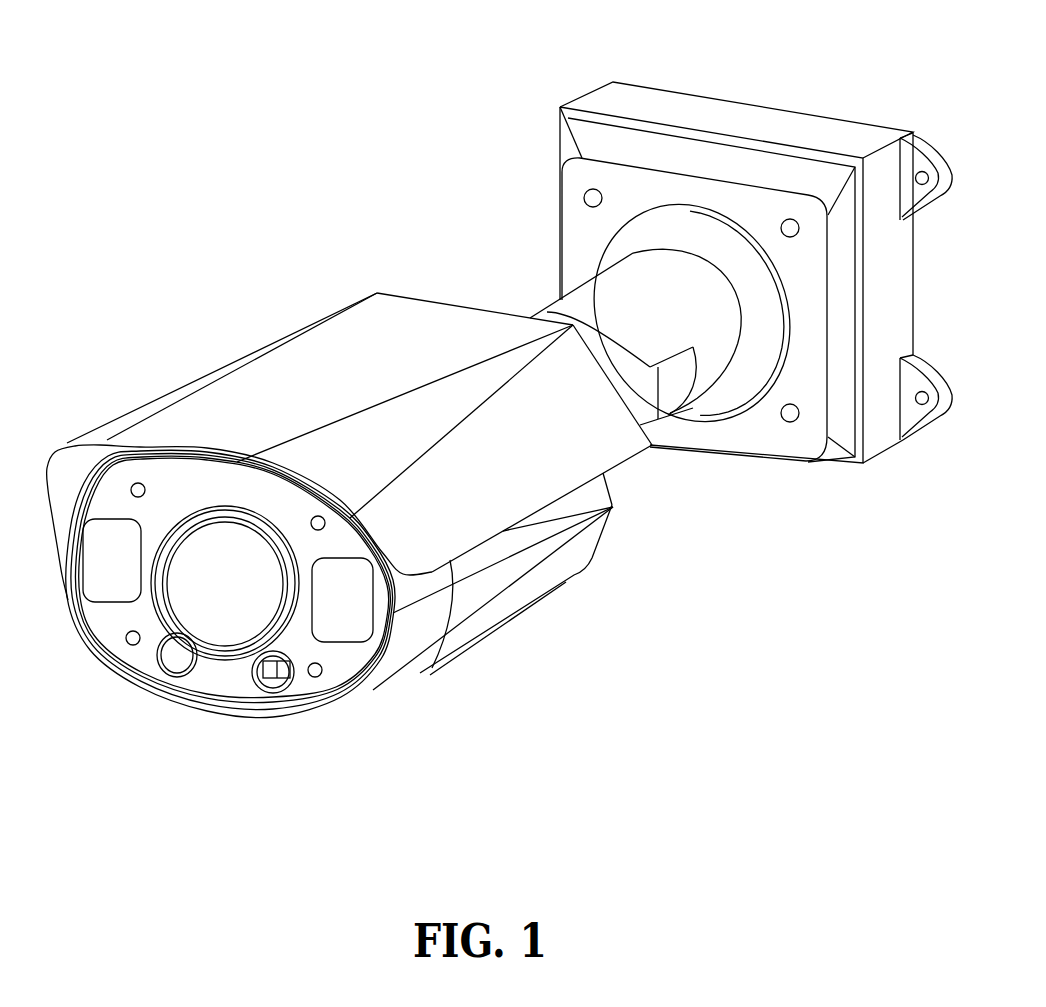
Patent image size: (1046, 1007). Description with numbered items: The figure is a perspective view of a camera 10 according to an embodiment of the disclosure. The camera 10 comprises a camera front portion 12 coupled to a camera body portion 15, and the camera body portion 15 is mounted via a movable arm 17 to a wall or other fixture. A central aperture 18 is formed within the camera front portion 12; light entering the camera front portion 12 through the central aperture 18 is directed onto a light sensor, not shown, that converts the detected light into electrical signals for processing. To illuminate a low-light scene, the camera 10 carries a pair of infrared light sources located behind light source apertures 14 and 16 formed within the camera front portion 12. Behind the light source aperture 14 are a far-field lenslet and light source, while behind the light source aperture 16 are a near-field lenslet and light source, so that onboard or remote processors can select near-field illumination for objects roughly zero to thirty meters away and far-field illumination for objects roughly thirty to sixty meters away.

The camera 10 is at (232, 91).
The camera front portion 12 is at (400, 647).
The light source aperture 14 is at (203, 667).
The camera body portion 15 is at (575, 553).
The light source aperture 16 is at (255, 676).
The movable arm 17 is at (620, 297).
The central aperture 18 is at (241, 599).